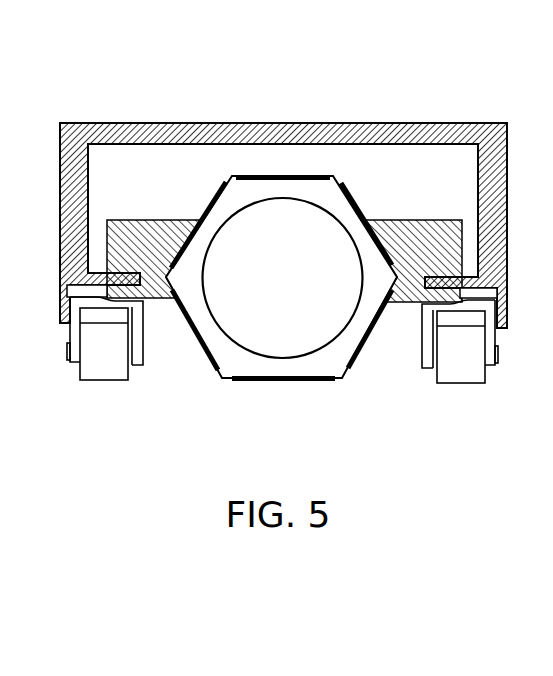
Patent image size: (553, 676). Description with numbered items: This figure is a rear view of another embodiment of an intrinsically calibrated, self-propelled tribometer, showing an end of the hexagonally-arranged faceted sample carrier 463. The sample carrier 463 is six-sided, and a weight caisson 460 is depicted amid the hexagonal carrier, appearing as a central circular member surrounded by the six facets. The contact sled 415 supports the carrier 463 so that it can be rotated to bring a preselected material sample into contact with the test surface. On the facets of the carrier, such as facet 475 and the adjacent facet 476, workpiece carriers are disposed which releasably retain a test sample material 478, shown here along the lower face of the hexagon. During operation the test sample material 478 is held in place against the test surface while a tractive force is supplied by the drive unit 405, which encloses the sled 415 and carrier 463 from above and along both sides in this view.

The drive unit 405 is at (425, 123).
The contact sled 415 is at (400, 220).
The weight caisson 460 is at (288, 292).
The faceted sample carrier 463 is at (223, 177).
The facet 475 is at (227, 382).
The second edge of hexagonal nut 476 is at (336, 381).
The test sample material 478 is at (287, 382).